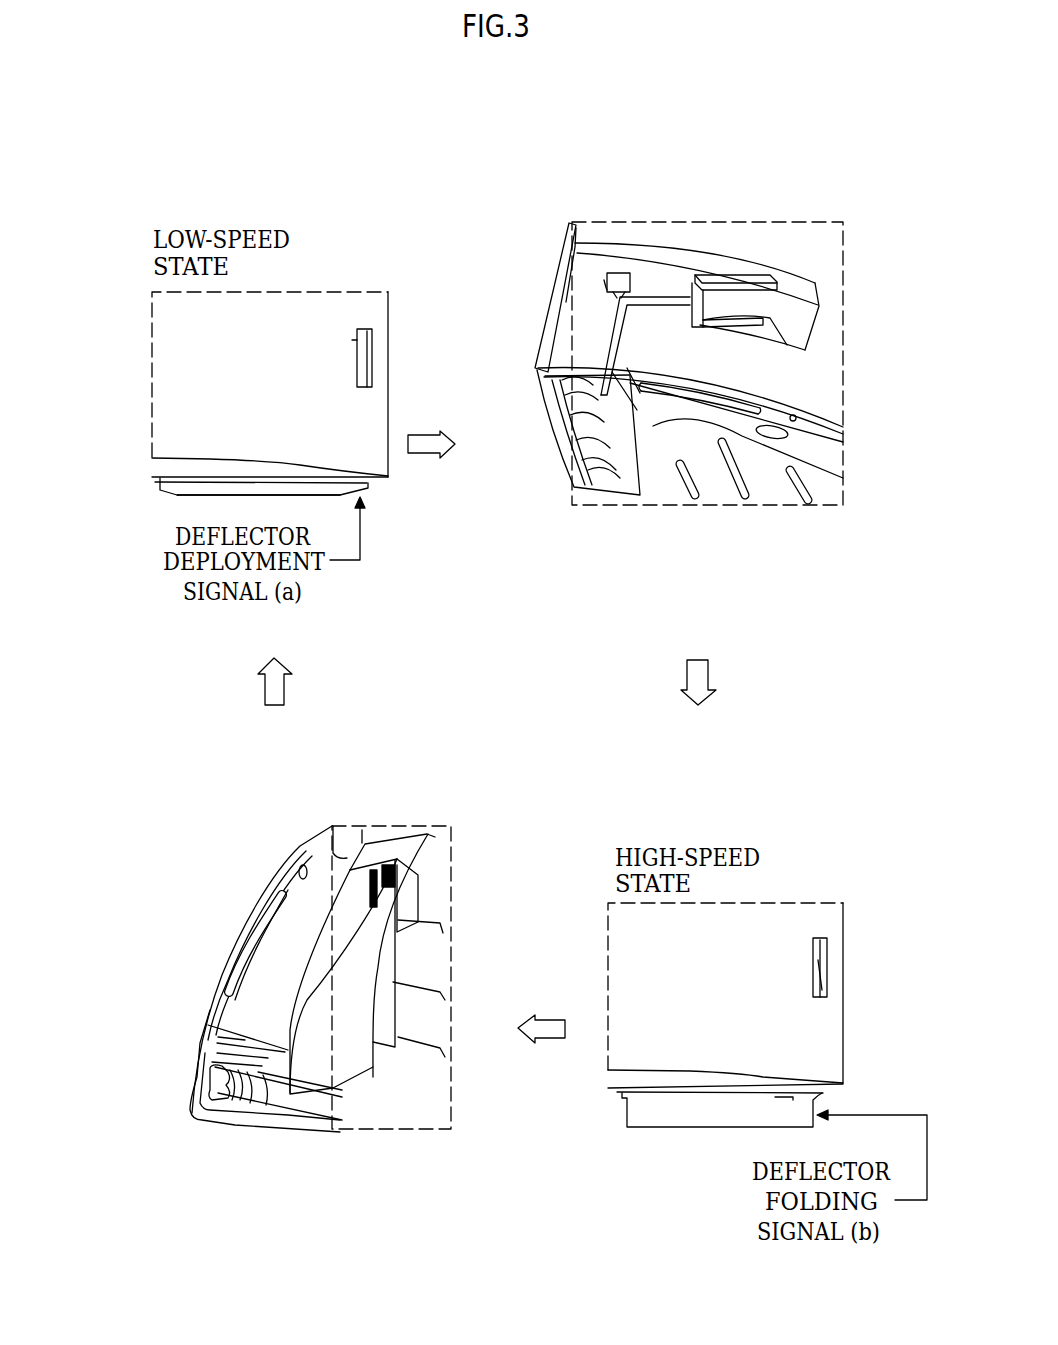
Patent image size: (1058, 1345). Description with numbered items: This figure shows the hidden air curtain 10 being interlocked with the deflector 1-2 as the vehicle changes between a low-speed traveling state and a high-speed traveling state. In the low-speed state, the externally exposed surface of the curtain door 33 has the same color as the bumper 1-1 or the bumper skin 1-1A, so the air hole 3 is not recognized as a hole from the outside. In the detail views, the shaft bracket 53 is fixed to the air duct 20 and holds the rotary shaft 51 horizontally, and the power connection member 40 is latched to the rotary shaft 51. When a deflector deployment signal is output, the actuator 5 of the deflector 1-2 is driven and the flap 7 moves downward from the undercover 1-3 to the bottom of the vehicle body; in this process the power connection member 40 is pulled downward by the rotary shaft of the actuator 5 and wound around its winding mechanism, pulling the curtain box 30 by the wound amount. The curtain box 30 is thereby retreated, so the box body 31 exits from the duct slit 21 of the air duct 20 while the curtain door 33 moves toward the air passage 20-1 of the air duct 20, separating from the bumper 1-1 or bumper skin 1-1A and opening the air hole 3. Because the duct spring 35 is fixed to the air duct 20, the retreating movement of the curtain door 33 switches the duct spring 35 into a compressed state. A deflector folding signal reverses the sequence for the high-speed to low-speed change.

The bumper 1-1 is at (149, 290).
The bumper skin 1-1A is at (800, 385).
The deflector 1-2 is at (193, 494).
The undercover 1-3 is at (757, 483).
The air hole 3 is at (357, 353).
The actuator 5 is at (577, 447).
The flap 7 is at (642, 445).
The hidden air curtain 10 is at (552, 230).
The air duct 20 is at (755, 270).
The air passage 20-1 is at (325, 870).
The duct slit 21 is at (762, 309).
The curtain box 30 is at (505, 757).
The box body 31 is at (733, 285).
The curtain door 33 is at (364, 331).
The duct spring 35 is at (386, 862).
The power connection member 40 is at (582, 335).
The rotary shaft 51 is at (607, 278).
The shaft bracket 53 is at (618, 290).